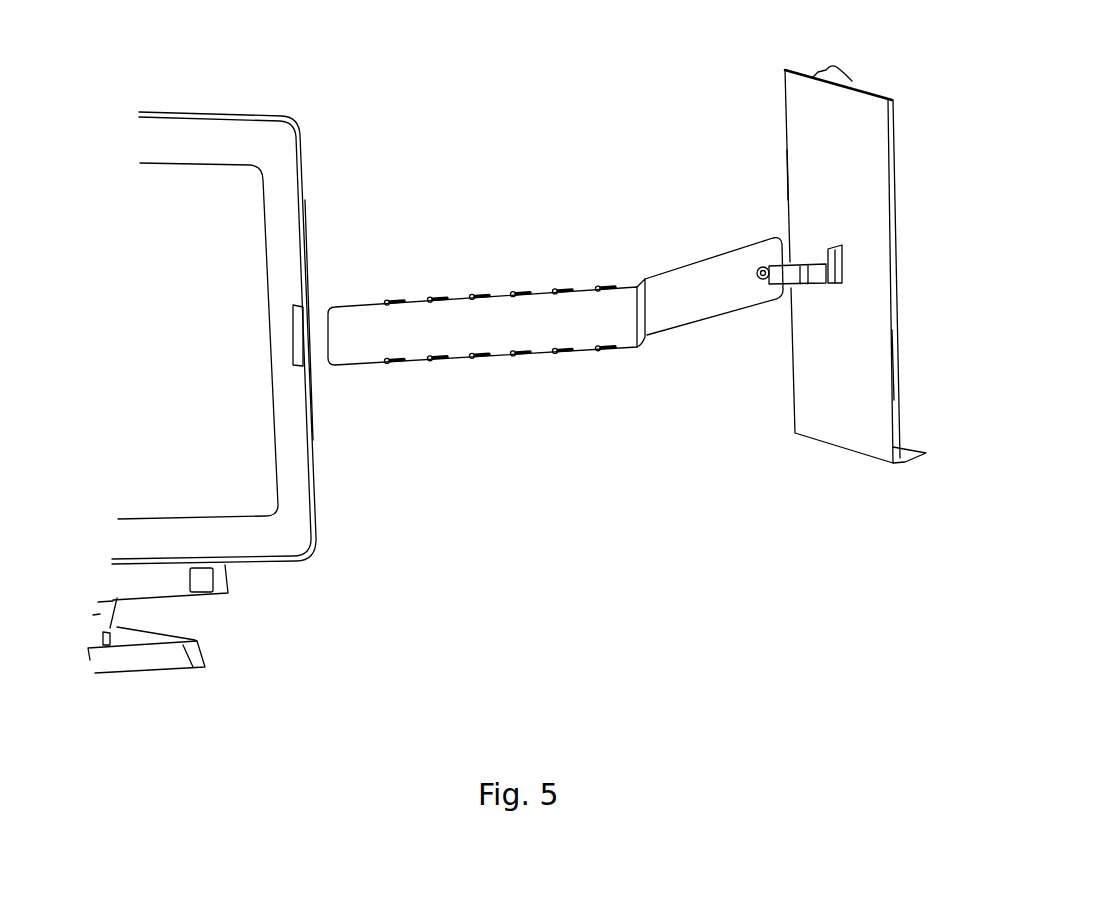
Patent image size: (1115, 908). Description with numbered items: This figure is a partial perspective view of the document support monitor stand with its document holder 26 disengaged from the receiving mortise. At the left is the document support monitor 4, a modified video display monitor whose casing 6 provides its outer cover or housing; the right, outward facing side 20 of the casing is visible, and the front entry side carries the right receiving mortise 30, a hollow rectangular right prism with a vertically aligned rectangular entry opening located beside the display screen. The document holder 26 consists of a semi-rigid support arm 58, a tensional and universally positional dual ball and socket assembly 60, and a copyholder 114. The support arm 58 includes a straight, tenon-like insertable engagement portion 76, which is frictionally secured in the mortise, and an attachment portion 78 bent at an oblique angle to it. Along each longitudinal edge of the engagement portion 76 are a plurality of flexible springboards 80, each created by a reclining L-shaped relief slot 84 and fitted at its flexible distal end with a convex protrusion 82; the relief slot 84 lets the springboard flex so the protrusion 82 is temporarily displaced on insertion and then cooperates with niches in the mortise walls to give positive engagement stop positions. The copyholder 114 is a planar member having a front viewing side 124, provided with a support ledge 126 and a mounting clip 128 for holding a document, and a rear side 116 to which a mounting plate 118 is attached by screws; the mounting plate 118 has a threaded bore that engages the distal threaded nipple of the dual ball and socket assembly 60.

The document support monitor 4 is at (303, 122).
The casing 6 is at (198, 323).
The right, outward facing side 20 is at (313, 465).
The document holder 26 is at (597, 140).
The right receiving mortise 30 is at (305, 312).
The semi-rigid support arm 58 is at (630, 280).
The dual ball and socket assembly 60 is at (807, 252).
The insertable engagement portion 76 is at (482, 326).
The attachment portion 78 is at (714, 286).
The flexible springboards 80 is at (437, 300).
The convex protrusion 82 is at (517, 295).
The reclining L-shaped relief slot 84 is at (430, 358).
The copyholder 114 is at (906, 132).
The rear side 116 is at (800, 160).
The mounting plate 118 is at (846, 251).
The front viewing side 124 is at (902, 370).
The support ledge 126 is at (907, 452).
The mounting clip 128 is at (832, 60).